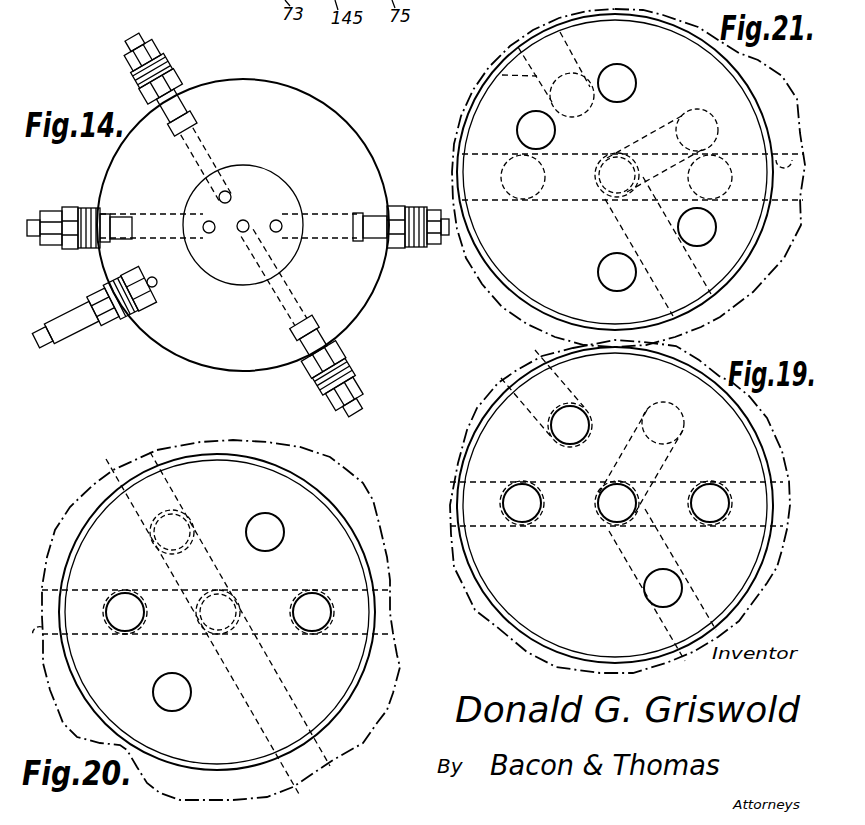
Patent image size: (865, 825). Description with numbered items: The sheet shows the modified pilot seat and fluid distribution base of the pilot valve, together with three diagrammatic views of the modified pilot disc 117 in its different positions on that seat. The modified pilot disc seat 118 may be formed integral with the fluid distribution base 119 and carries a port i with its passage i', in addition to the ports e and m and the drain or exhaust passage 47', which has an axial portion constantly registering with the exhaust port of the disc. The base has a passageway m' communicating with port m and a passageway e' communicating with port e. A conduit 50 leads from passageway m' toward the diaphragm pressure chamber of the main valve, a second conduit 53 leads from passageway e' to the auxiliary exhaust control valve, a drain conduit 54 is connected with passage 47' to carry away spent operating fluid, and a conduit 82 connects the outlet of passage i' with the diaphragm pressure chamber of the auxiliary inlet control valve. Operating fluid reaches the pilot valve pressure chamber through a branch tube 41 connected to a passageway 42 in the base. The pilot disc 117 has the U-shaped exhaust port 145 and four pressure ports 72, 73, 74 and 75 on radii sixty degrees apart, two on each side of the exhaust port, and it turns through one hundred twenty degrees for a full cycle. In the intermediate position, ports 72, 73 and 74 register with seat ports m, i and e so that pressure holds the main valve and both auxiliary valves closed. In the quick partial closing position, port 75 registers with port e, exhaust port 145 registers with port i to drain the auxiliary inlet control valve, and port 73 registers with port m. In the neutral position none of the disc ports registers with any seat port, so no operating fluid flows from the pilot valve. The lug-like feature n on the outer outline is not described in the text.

In FIG. 14, the fluid distribution base 119 is at (345, 122).
In FIG. 21, the fluid distribution base 119 is at (768, 269).
In FIG. 19, the fluid distribution base 119 is at (527, 645).
In FIG. 20, the fluid distribution base 119 is at (193, 443).
In FIG. 14, the modified pilot disc seat 118 is at (232, 284).
In FIG. 21, the modified pilot disc seat 118 is at (516, 298).
In FIG. 19, the modified pilot disc seat 118 is at (498, 610).
In FIG. 20, the modified pilot disc seat 118 is at (100, 497).
In FIG. 21, the modified pilot disc 117 is at (510, 257).
In FIG. 19, the modified pilot disc 117 is at (466, 578).
In FIG. 20, the modified pilot disc 117 is at (100, 532).
In FIG. 21, the U-shaped exhaust port 145 is at (612, 139).
In FIG. 19, the U-shaped exhaust port 145 is at (668, 460).
In FIG. 20, the U-shaped exhaust port 145 is at (200, 548).
In FIG. 14, the drain or exhaust passage 47' is at (285, 292).
In FIG. 21, the drain or exhaust passage 47' is at (658, 249).
In FIG. 19, the drain or exhaust passage 47' is at (662, 585).
In FIG. 20, the drain or exhaust passage 47' is at (357, 762).
In FIG. 21, the pressure port 72 is at (518, 132).
In FIG. 19, the pressure port 72 is at (522, 523).
In FIG. 20, the pressure port 72 is at (175, 711).
In FIG. 21, the pressure port 73 is at (634, 80).
In FIG. 19, the pressure port 73 is at (560, 440).
In FIG. 20, the pressure port 73 is at (125, 632).
In FIG. 21, the pressure port 74 is at (713, 228).
In FIG. 19, the pressure port 74 is at (710, 523).
In FIG. 20, the pressure port 74 is at (285, 532).
In FIG. 21, the pressure port 75 is at (610, 286).
In FIG. 19, the pressure port 75 is at (650, 598).
In FIG. 20, the pressure port 75 is at (310, 632).
In FIG. 14, the port i is at (215, 164).
In FIG. 21, the port i is at (556, 74).
In FIG. 19, the port i is at (547, 394).
In FIG. 20, the port i is at (218, 623).
In FIG. 21, the passage i' is at (508, 58).
In FIG. 19, the passage i' is at (488, 374).
In FIG. 20, the passage i' is at (119, 456).
In FIG. 14, the port e is at (296, 203).
In FIG. 21, the port e is at (721, 177).
In FIG. 19, the port e is at (744, 515).
In FIG. 20, the port e is at (333, 579).
In FIG. 14, the passageway e' is at (319, 216).
In FIG. 21, the passageway e' is at (784, 146).
In FIG. 19, the passageway e' is at (745, 468).
In FIG. 20, the passageway e' is at (350, 616).
In FIG. 14, the port m is at (212, 243).
In FIG. 21, the port m is at (523, 193).
In FIG. 19, the port m is at (484, 510).
In FIG. 20, the port m is at (217, 598).
In FIG. 14, the passageway m' is at (151, 216).
In FIG. 21, the passageway m' is at (632, 193).
In FIG. 19, the passageway m' is at (596, 497).
In FIG. 14, the conduit 50 is at (34, 214).
In FIG. 14, the second conduit 53 is at (420, 246).
In FIG. 14, the drain conduit 54 is at (366, 402).
In FIG. 14, the conduit 82 is at (145, 45).
In FIG. 14, the branch tube 41 is at (46, 343).
In FIG. 14, the passageway 42 is at (158, 283).
In FIG. 20, the lug n is at (40, 636).